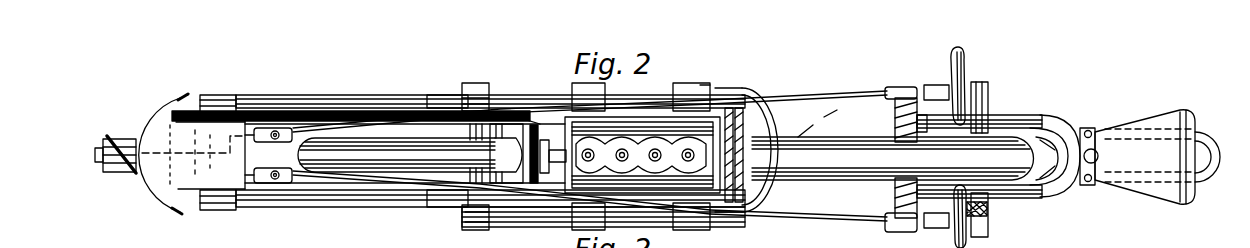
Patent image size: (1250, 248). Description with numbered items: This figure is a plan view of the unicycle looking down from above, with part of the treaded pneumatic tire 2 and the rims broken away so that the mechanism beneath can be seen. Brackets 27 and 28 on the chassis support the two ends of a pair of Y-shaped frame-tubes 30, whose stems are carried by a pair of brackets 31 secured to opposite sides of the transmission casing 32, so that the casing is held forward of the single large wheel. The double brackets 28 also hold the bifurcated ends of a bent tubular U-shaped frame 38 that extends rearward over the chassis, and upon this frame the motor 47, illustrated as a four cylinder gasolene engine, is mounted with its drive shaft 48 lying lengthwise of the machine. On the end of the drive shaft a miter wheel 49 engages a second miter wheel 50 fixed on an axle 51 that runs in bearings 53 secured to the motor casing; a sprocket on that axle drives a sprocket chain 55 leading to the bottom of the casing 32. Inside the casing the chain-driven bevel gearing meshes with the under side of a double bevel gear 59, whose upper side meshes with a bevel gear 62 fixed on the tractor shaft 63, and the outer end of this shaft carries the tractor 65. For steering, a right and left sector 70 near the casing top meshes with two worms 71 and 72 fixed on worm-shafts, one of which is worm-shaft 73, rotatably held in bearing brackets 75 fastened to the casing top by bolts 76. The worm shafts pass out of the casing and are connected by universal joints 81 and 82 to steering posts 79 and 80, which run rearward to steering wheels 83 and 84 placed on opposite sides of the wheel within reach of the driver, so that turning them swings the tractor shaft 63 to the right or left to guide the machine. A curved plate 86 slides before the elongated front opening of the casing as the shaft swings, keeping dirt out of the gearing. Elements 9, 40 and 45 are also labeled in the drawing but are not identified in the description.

The treaded pneumatic tire 2 is at (342, 152).
The shaft 9 is at (95, 153).
The bracket 27 is at (436, 95).
The bracket 28 is at (472, 83).
The Y-shaped frame-tubes 30 is at (317, 96).
The brackets 31 is at (210, 95).
The transmission casing 32 is at (153, 130).
The U-shaped frame 38 is at (736, 97).
The tube 40 is at (932, 118).
The post 45 is at (950, 236).
The motor 47 is at (672, 120).
The drive shaft 48 is at (729, 210).
The miter wheel 49 is at (532, 188).
The miter wheel 50 is at (523, 128).
The axle 51 is at (470, 186).
The bearings 53 is at (547, 178).
The sprocket chain 55 is at (328, 110).
The double bevel gear 59 is at (180, 110).
The bevel gear 62 is at (528, 112).
The tractor shaft 63 is at (108, 166).
The tractor 65 is at (122, 176).
The right and left sector 70 is at (977, 209).
The worm 71 is at (1052, 121).
The worm 72 is at (1222, 130).
The worm-shaft 73 is at (1137, 157).
The bearing brackets 75 is at (1052, 172).
The bolts 76 is at (983, 83).
The steering post 79 is at (808, 95).
The steering post 80 is at (824, 221).
The universal joint 81 is at (268, 126).
The universal joint 82 is at (281, 184).
The steering wheel 83 is at (948, 66).
The steering wheel 84 is at (990, 232).
The curved plate 86 is at (168, 212).